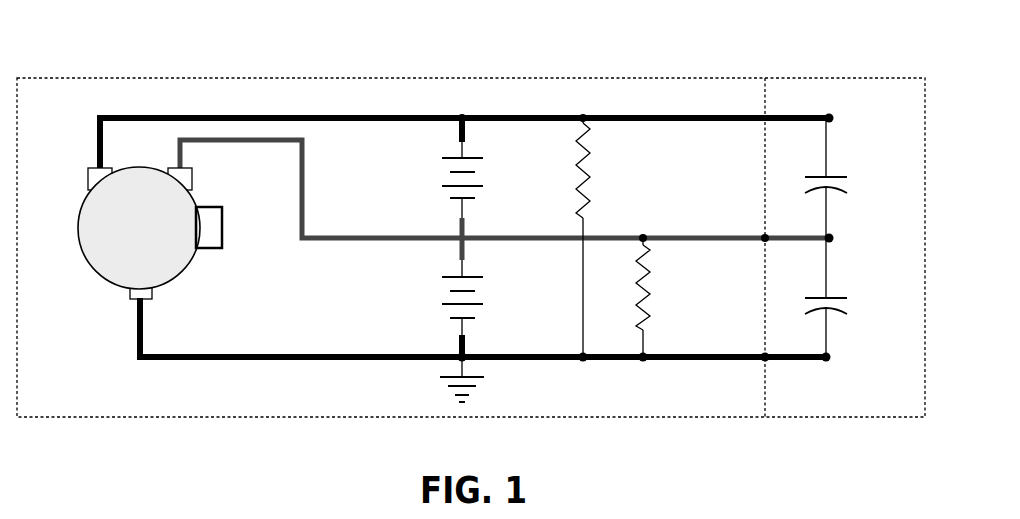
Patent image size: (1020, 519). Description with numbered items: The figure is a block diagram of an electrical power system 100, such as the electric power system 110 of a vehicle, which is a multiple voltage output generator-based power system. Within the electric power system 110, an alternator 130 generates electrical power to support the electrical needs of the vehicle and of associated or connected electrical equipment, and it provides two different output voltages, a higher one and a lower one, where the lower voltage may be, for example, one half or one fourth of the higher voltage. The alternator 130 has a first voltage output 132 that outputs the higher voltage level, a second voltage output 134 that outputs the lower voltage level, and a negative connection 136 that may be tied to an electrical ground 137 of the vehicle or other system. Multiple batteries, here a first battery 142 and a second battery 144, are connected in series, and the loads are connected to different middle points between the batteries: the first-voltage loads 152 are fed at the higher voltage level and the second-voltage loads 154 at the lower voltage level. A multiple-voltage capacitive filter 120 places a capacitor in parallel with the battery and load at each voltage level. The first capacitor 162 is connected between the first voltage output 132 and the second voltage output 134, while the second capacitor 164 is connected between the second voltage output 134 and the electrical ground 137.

The electrical power system 100 is at (140, 46).
The electric power system 110 is at (414, 70).
The multiple-voltage capacitive filter 120 is at (833, 70).
The alternator 130 is at (150, 228).
The first voltage output 132 is at (94, 168).
The second voltage output 134 is at (172, 168).
The connection 136 is at (131, 292).
The electrical ground 137 is at (474, 383).
The battery 142 is at (447, 183).
The battery 144 is at (447, 303).
The V1 loads 152 is at (588, 158).
The V2 loads 154 is at (649, 276).
The capacitor 162 is at (823, 177).
The capacitor 164 is at (823, 298).